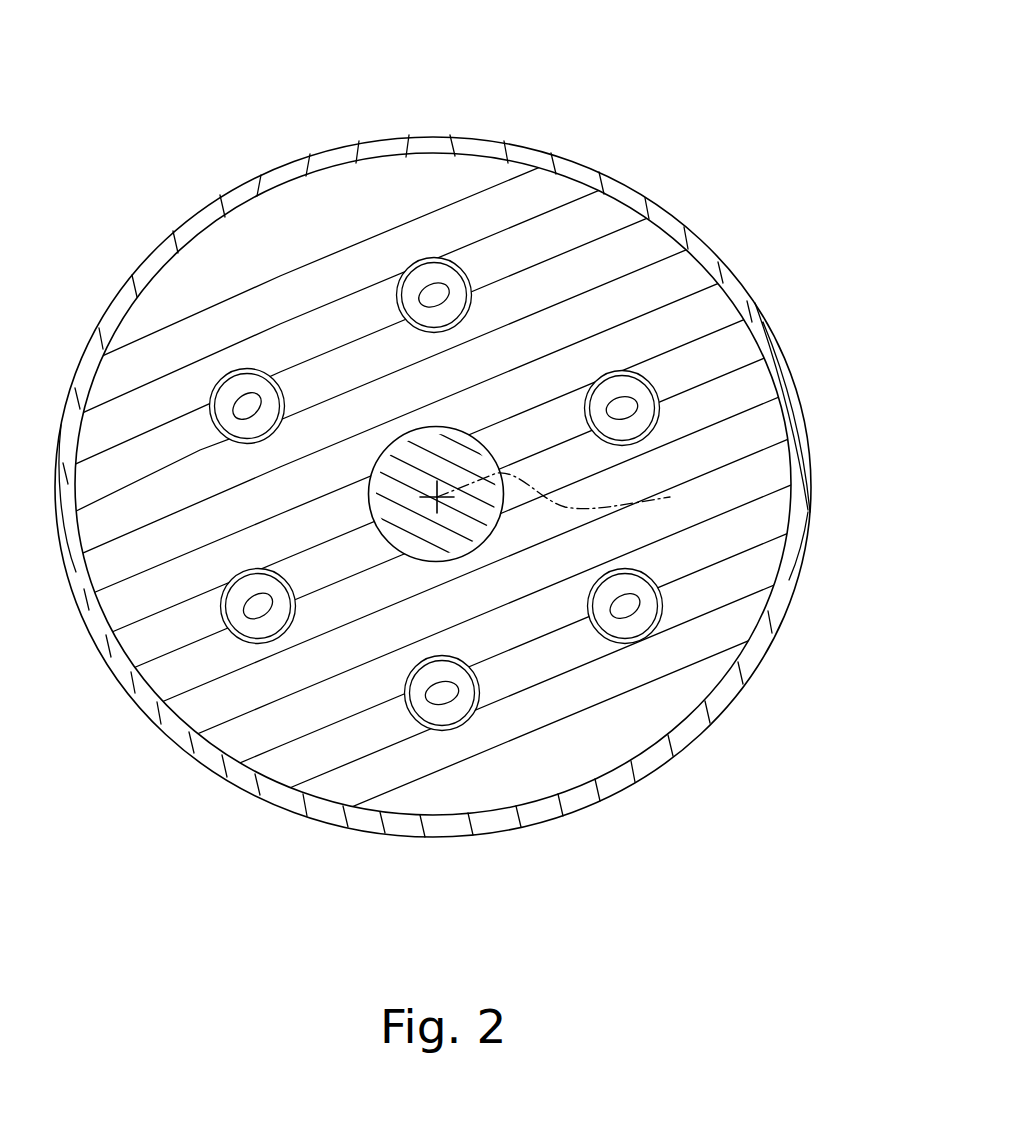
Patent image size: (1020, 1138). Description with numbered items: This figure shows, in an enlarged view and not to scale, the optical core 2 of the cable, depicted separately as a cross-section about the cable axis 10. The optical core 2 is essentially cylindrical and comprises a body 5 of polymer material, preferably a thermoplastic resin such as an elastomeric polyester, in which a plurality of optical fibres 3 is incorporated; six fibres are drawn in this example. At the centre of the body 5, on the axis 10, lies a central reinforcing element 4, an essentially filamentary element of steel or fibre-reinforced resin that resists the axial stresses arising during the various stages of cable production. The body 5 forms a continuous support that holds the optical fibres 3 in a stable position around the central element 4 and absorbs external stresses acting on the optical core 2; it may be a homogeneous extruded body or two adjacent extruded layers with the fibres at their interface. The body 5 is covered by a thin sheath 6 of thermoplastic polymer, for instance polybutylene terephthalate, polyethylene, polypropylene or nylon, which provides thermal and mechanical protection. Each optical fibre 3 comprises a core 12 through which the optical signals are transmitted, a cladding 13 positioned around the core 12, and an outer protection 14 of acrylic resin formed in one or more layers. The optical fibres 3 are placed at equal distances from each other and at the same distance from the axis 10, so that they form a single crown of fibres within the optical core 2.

The optical core 2 is at (687, 192).
The optical fibres 3 is at (435, 585).
The central reinforcing element 4 is at (277, 402).
The body 5 is at (435, 492).
The sheath 6 is at (430, 145).
The axis 10 is at (580, 493).
The core 12 is at (733, 613).
The cladding 13 is at (719, 666).
The outer protection 14 is at (685, 717).